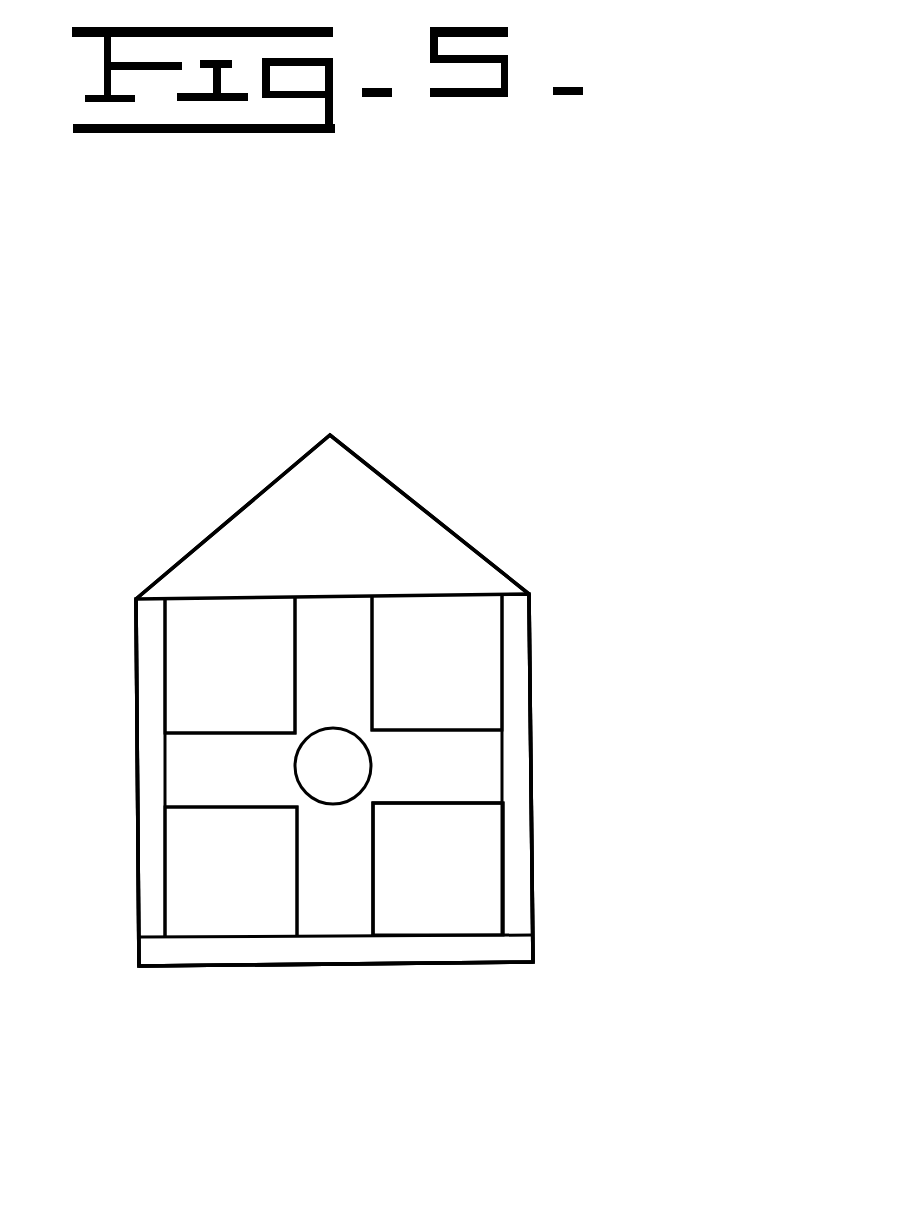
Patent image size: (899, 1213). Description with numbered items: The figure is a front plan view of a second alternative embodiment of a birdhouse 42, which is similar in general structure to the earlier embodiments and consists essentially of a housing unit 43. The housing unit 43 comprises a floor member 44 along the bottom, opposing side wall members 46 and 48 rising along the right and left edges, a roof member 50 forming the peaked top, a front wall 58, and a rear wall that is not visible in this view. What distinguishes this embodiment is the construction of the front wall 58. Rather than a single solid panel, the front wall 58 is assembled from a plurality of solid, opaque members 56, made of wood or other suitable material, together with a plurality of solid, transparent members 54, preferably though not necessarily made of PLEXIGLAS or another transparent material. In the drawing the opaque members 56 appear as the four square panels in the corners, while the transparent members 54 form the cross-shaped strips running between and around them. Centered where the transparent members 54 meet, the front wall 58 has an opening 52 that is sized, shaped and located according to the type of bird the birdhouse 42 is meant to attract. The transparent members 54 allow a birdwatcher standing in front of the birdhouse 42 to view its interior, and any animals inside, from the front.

The birdhouse 42 is at (657, 437).
The housing unit 43 is at (562, 588).
The floor member 44 is at (533, 945).
The side wall member 46 is at (533, 850).
The side wall member 48 is at (137, 888).
The roof member 50 is at (265, 522).
The opening 52 is at (333, 767).
The transparent members 54 is at (353, 640).
The opaque members 56 is at (203, 667).
The front wall 58 is at (433, 902).